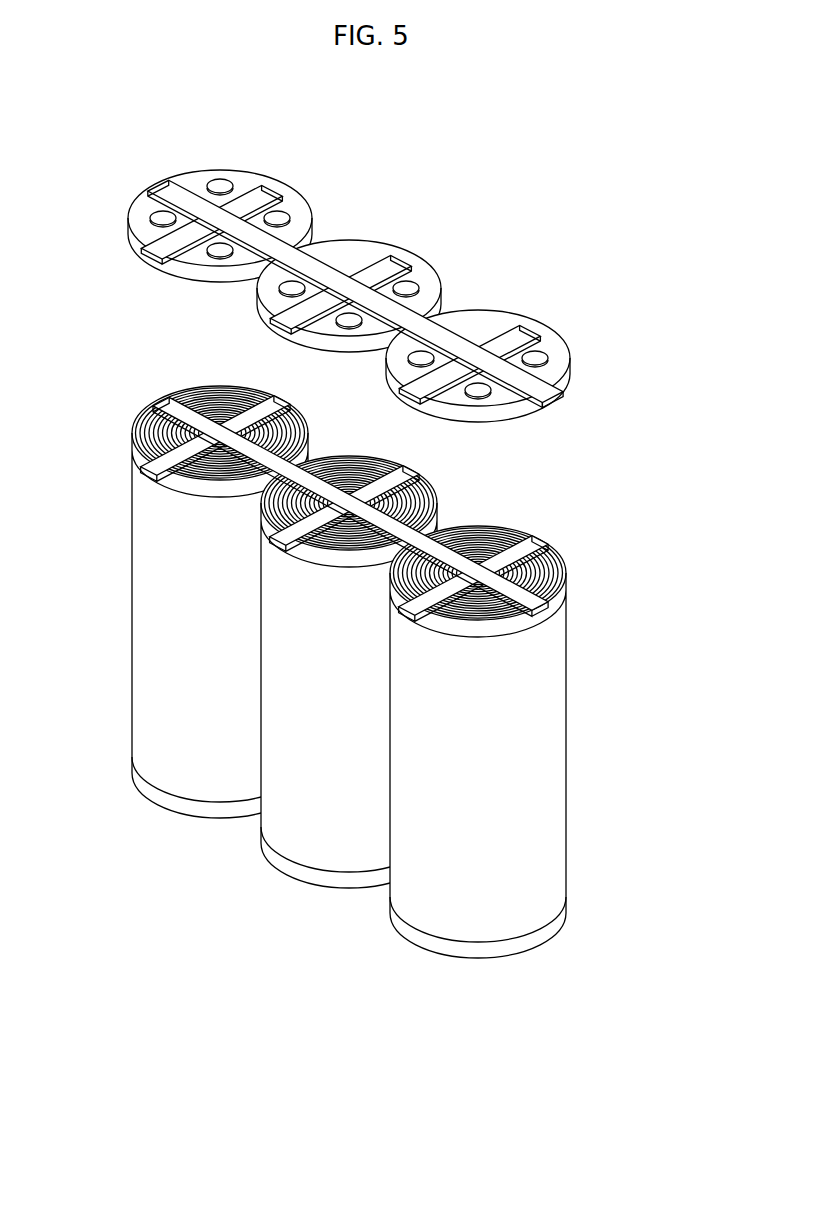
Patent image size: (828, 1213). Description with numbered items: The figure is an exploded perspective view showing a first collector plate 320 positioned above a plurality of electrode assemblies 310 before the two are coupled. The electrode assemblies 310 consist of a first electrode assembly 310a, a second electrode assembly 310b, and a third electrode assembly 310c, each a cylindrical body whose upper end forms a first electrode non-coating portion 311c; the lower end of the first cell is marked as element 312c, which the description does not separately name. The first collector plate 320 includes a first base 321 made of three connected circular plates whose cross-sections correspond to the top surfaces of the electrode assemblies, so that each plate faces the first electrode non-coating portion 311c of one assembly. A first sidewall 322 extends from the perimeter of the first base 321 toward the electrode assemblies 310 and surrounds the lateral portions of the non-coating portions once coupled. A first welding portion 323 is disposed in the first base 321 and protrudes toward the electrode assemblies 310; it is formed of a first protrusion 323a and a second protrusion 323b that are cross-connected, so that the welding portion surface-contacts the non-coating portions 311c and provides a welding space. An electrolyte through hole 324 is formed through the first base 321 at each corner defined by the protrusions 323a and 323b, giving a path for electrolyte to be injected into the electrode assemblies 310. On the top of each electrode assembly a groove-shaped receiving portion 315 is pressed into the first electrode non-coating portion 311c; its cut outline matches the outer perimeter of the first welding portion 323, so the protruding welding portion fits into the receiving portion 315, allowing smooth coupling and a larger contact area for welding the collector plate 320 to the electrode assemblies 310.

The plurality of electrode assemblies 310 is at (338, 708).
The first electrode assembly 310a is at (194, 620).
The second electrode assembly 310b is at (310, 845).
The third electrode assembly 310c is at (518, 773).
The first electrode non-coating portion 311c is at (143, 462).
The negative electrode terminal 312c is at (245, 786).
The receiving portion 315 is at (525, 588).
The first collector plate 320 is at (389, 260).
The first base 321 is at (177, 218).
The first sidewall 322 is at (177, 260).
The first welding portion 323 is at (442, 293).
The first protrusion 323a is at (537, 392).
The second protrusion 323b is at (530, 322).
The electrolyte through hole 324 is at (214, 147).